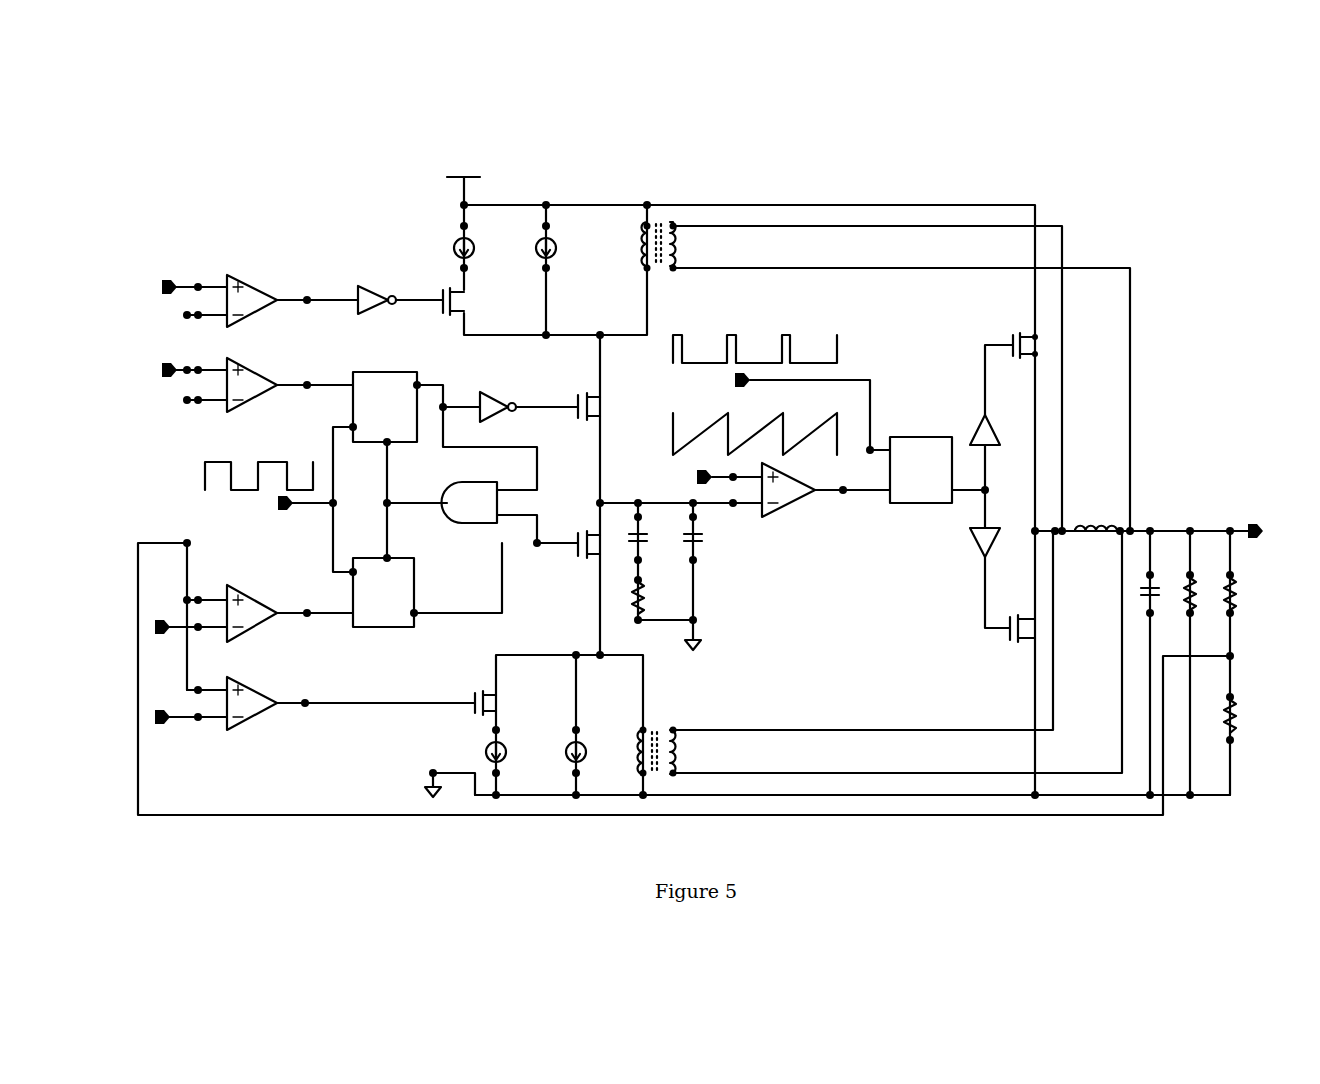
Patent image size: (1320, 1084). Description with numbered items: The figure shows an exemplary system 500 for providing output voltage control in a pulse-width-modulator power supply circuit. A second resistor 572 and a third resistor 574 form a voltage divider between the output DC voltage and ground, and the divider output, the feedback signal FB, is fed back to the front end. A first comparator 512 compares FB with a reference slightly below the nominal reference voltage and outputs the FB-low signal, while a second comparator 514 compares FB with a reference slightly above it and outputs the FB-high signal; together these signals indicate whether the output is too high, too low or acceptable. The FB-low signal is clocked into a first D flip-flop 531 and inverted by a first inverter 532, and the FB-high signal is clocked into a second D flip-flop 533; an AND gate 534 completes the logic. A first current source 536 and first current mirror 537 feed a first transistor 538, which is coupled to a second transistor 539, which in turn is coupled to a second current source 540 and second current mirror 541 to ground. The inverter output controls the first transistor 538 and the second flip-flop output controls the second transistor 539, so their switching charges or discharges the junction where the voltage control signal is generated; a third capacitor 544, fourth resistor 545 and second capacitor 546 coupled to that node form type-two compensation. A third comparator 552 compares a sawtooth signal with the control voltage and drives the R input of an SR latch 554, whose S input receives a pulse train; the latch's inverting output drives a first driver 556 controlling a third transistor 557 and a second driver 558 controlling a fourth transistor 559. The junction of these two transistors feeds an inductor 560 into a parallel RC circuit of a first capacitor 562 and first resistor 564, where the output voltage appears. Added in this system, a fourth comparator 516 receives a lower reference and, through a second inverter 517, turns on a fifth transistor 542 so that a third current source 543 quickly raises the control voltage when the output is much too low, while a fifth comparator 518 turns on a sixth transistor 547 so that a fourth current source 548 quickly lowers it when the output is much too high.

The exemplary system 500 is at (175, 116).
The first comparator 512 is at (262, 395).
The second comparator 514 is at (255, 625).
The fourth comparator 516 is at (262, 307).
The second inverter 517 is at (378, 308).
The fifth comparator 518 is at (257, 719).
The first D flip-flop 531 is at (403, 445).
The first inverter 532 is at (498, 418).
The second D flip-flop 533 is at (356, 630).
The AND gate 534 is at (483, 524).
The first current source 536 is at (555, 258).
The first current mirror 537 is at (676, 240).
The first transistor 538 is at (594, 424).
The second transistor 539 is at (592, 562).
The second current source 540 is at (586, 758).
The second current mirror 541 is at (676, 750).
The fifth transistor 542 is at (462, 295).
The third current source 543 is at (472, 258).
The third capacitor 544 is at (633, 550).
The fourth resistor 545 is at (632, 605).
The second capacitor 546 is at (698, 550).
The sixth transistor 547 is at (478, 713).
The fourth current source 548 is at (485, 752).
The third comparator 552 is at (785, 510).
The SR latch 554 is at (930, 506).
The first driver 556 is at (982, 422).
The third transistor 557 is at (1015, 360).
The second driver 558 is at (982, 558).
The fourth transistor 559 is at (1010, 645).
The inductor 560 is at (1090, 524).
The first capacitor 562 is at (1153, 606).
The first resistor 564 is at (1196, 606).
The second resistor 572 is at (1238, 606).
The third resistor 574 is at (1238, 728).